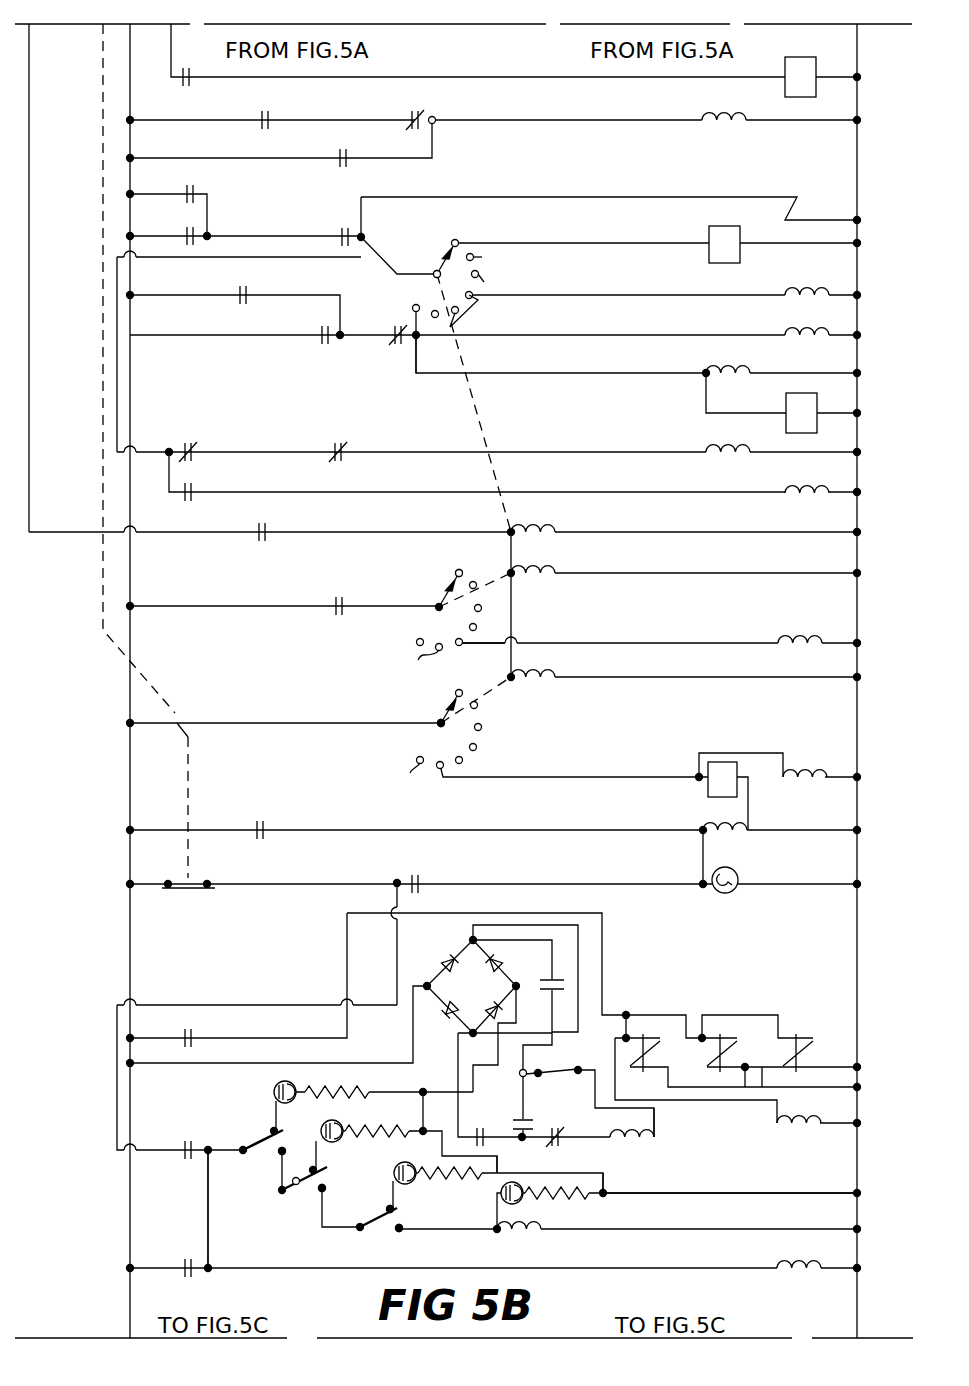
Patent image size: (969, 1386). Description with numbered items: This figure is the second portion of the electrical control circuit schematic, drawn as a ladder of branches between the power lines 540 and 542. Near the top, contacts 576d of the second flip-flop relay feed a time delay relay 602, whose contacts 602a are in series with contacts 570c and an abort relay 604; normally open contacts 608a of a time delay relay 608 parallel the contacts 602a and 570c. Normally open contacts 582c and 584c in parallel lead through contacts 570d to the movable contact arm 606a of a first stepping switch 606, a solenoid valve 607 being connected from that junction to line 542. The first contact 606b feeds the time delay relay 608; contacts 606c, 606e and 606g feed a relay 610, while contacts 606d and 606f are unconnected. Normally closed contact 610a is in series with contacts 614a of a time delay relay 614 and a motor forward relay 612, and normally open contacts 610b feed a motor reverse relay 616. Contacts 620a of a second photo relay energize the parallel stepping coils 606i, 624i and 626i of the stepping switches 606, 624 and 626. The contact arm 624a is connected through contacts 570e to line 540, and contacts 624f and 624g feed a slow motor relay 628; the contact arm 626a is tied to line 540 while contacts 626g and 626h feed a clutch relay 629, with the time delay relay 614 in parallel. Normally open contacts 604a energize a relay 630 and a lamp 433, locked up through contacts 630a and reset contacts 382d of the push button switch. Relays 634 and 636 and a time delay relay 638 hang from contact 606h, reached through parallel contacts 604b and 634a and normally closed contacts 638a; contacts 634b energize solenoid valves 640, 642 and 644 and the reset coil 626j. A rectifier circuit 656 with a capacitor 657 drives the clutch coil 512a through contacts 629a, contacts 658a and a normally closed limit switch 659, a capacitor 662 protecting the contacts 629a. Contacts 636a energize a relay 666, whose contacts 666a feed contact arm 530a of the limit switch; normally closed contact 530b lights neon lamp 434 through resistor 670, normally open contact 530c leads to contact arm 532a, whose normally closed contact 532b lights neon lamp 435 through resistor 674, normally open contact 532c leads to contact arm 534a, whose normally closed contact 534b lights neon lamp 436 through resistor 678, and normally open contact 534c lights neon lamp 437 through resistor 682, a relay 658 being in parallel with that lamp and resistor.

The power line 540 is at (130, 117).
The power line 542 is at (857, 150).
The contacts of the second flip-flop relay 576d is at (190, 80).
The time delay relay 602 is at (792, 77).
The contacts of time delay relay 602a is at (272, 118).
The contacts of the first flip-flop relay 570c is at (422, 115).
The abort relay 604 is at (712, 130).
The normally open contacts of time delay relay 608a is at (350, 165).
The normally open contacts 582c is at (198, 196).
The normally open contacts 584c is at (198, 238).
The contacts of the first flip-flop relay 570d is at (338, 232).
The solenoid valve 607 is at (830, 200).
The time delay relay 608 is at (712, 255).
The first stepping switch 606 is at (425, 284).
The movable contact arm 606a is at (432, 272).
The first contact of stepping switch 606b is at (458, 240).
The contact of stepping switch 606c is at (482, 258).
The unconnected contact of stepping switch 606d is at (484, 282).
The contact of stepping switch 606e is at (495, 305).
The unconnected contact of stepping switch 606f is at (459, 316).
The contact of stepping switch 606g is at (435, 318).
The contact of stepping switch 606h is at (390, 345).
The normally closed contacts of time delay relay 638a is at (416, 372).
The relay 610 is at (798, 294).
The relay 634 is at (795, 332).
The relay 636 is at (740, 372).
The time delay relay 638 is at (788, 410).
The normally open contacts of abort relay 604b is at (250, 292).
The normally open contacts of relay 634a is at (318, 340).
The normally closed contact of relay 610a is at (180, 445).
The normally open contacts of relay 610b is at (196, 490).
The contacts of time delay relay 614a is at (346, 448).
The motor forward relay 612 is at (715, 450).
The motor reverse relay 616 is at (795, 490).
The contacts of second photo relay 620a is at (270, 530).
The stepping switch coil 606i is at (540, 530).
The stepping coil 624i is at (540, 572).
The stepping coil 626i is at (557, 677).
The contacts of the first flip-flop relay 570e is at (348, 603).
The stepping switch 624 is at (430, 620).
The movable contact arm 624a is at (455, 598).
The contact of stepping switch 624f is at (490, 642).
The contact of stepping switch 624g is at (418, 655).
The slow motor relay 628 is at (798, 645).
The stepping switch 626 is at (430, 735).
The contact arm 626a is at (436, 720).
The contact of stepping switch 626h is at (412, 765).
The contact of stepping switch 626g is at (440, 770).
The time delay relay 614 is at (722, 762).
The clutch relay 629 is at (803, 775).
The relay 630 is at (705, 830).
The normally open contacts of abort relay 604a is at (293, 815).
The reset contacts of push button switch 382d is at (207, 882).
The contacts of relay 630a is at (421, 882).
The lamp 433 is at (740, 878).
The DC rectifier circuit 656 is at (455, 976).
The capacitor 657 is at (565, 975).
The solenoid valve 640 is at (645, 1035).
The solenoid valve 642 is at (722, 1035).
The solenoid valve 644 is at (798, 1035).
The normally open contacts of relay 634b is at (210, 1032).
The neon lamp 434 is at (274, 1092).
The resistor 670 is at (370, 1092).
The normally closed limit switch 659 is at (545, 1068).
The capacitor 662 is at (525, 1115).
The normally open contacts of relay 666a is at (180, 1150).
The contact arm of limit switch 530a is at (260, 1145).
The normally closed contact 530b is at (276, 1158).
The normally open contact 530c is at (281, 1160).
The resistor 674 is at (363, 1131).
The neon lamp 435 is at (330, 1142).
The contact arm 532a is at (298, 1185).
The switch contact 532b is at (315, 1195).
The normally open contact 532c is at (323, 1188).
The normally closed contact 534b is at (390, 1209).
The neon lamp 436 is at (404, 1185).
The resistor 678 is at (450, 1178).
The contacts of clutch relay 629a is at (490, 1123).
The contacts of relay 658a is at (568, 1123).
The clutch coil 512a is at (632, 1142).
The reset coil of stepping switch 626j is at (798, 1128).
The neon lamp 437 is at (522, 1200).
The resistor 682 is at (604, 1196).
The contact arm 534a is at (362, 1232).
The normally open contact 534c is at (399, 1232).
The relay 658 is at (520, 1233).
The relay 666 is at (798, 1273).
The normally open contacts of relay 636a is at (181, 1265).